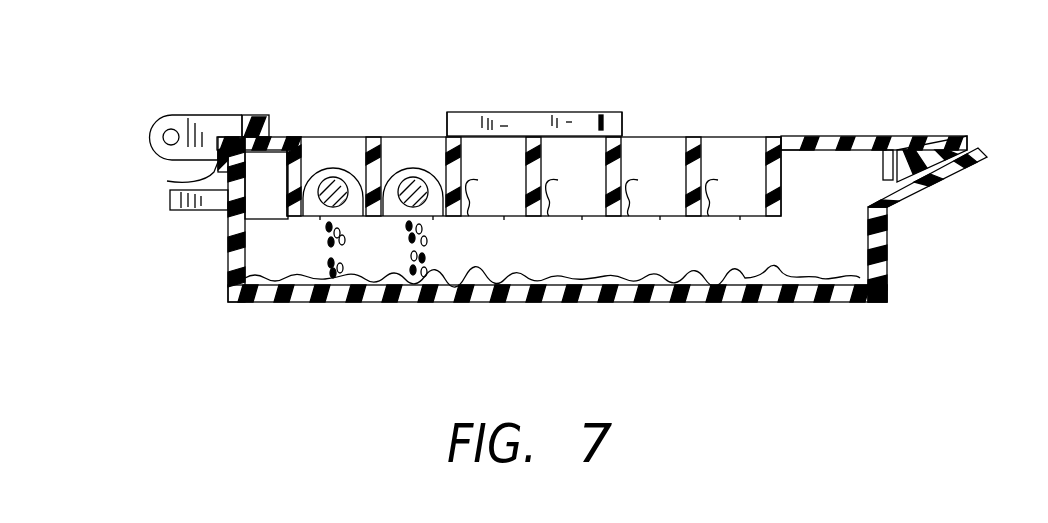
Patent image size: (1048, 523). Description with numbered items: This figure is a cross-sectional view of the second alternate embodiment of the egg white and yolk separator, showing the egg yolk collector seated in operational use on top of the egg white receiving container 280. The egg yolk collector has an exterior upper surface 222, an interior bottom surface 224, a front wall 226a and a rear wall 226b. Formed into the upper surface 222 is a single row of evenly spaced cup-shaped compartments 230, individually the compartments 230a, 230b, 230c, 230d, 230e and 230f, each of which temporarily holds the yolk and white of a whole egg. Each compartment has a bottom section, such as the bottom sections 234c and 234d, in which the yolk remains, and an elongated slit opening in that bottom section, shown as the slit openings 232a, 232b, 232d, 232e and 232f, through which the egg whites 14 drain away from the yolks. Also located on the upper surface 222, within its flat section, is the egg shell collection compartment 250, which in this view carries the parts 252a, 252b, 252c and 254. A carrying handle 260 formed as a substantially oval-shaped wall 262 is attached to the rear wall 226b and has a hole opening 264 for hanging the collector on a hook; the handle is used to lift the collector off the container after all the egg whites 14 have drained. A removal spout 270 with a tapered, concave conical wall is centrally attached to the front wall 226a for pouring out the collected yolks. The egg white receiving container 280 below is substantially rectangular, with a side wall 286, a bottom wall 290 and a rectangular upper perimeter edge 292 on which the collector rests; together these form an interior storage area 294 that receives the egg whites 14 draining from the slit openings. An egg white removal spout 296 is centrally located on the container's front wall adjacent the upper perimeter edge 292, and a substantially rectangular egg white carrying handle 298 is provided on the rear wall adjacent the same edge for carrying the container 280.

The egg whites 14 is at (405, 242).
The upper surface 222 is at (778, 137).
The interior bottom surface 224 is at (826, 151).
The front wall 226a is at (885, 158).
The rear wall 226b is at (159, 178).
The cup-shaped compartments 230 is at (598, 148).
The cup-shaped compartment 230a is at (719, 158).
The cup-shaped compartment 230b is at (639, 158).
The cup-shaped compartment 230c is at (559, 158).
The cup-shaped compartment 230d is at (479, 158).
The cup-shaped compartment 230e is at (400, 158).
The cup-shaped compartment 230f is at (319, 158).
The slit opening 232a is at (740, 217).
The slit opening 232b is at (582, 217).
The slit opening 232d is at (504, 217).
The slit opening 232e is at (433, 217).
The slit opening 232f is at (320, 217).
The bottom section 234c is at (573, 191).
The bottom section 234d is at (493, 191).
The egg shell collection compartment 250 is at (476, 104).
The connector 252a is at (622, 120).
The connector 252b is at (448, 126).
The connector 252c is at (568, 122).
The contact 254 is at (500, 126).
The carrying handle 260 is at (203, 84).
The oval-shaped wall 262 is at (207, 121).
The hole opening 264 is at (159, 112).
The removal spout 270 is at (905, 150).
The egg white receiving container 280 is at (625, 248).
The side wall 286 is at (275, 218).
The bottom wall 290 is at (650, 290).
The upper perimeter edge 292 is at (255, 138).
The interior storage area 294 is at (797, 225).
The egg white removal spout 296 is at (952, 168).
The egg white carrying handle 298 is at (213, 200).